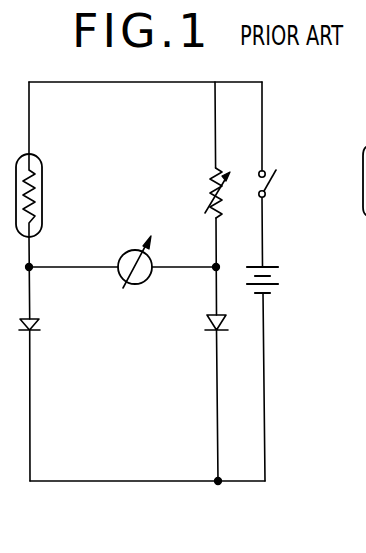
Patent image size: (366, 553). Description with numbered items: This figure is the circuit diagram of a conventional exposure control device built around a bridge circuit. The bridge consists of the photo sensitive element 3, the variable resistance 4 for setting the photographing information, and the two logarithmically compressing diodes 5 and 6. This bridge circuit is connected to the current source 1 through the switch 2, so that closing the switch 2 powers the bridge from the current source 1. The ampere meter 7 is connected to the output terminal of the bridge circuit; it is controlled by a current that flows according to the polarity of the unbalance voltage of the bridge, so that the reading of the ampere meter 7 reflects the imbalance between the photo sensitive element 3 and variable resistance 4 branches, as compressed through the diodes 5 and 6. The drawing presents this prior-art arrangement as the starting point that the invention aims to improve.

The current source 1 is at (272, 277).
The switch 2 is at (268, 185).
The photo sensitive element 3 is at (51, 190).
The variable resistance 4 is at (209, 181).
The logarithmically compressing diode 5 is at (29, 318).
The logarithmically compressing diode 6 is at (207, 323).
The ampere meter 7 is at (135, 250).